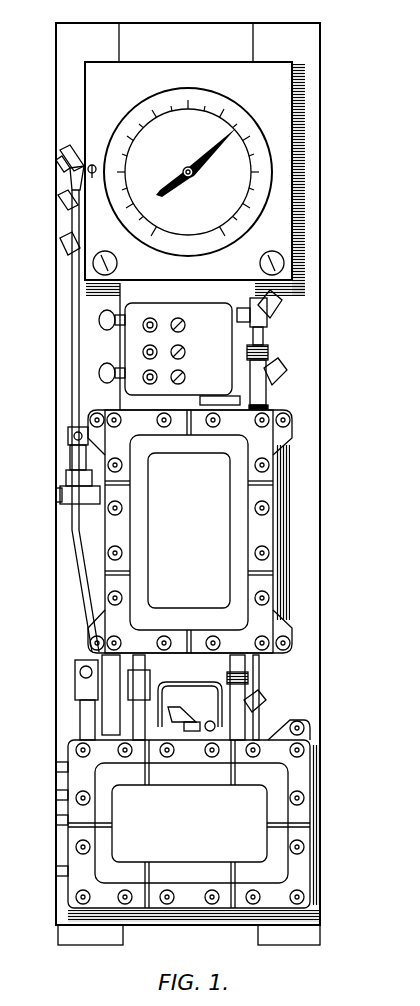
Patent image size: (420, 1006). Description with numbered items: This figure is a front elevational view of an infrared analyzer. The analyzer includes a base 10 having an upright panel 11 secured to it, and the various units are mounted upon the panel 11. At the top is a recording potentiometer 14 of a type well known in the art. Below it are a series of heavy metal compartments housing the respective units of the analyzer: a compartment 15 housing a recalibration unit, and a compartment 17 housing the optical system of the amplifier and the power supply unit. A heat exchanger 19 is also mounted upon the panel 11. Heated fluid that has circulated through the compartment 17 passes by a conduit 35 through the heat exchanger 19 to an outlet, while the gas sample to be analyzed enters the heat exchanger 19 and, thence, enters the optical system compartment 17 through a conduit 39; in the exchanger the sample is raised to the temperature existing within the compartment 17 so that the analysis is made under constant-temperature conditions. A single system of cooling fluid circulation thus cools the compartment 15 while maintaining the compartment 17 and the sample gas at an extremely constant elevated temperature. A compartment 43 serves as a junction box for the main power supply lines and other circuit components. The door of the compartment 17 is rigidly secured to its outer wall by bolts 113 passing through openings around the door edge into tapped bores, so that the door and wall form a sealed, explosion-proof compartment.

The base 10 is at (105, 937).
The upright panel 11 is at (310, 332).
The recording potentiometer 14 is at (283, 126).
The compartment 15 is at (262, 533).
The compartment 17 is at (302, 773).
The heat exchanger 19 is at (246, 697).
The conduit 35 is at (204, 682).
The conduit 39 is at (194, 722).
The compartment 43 is at (196, 308).
The bolts 113 is at (303, 852).